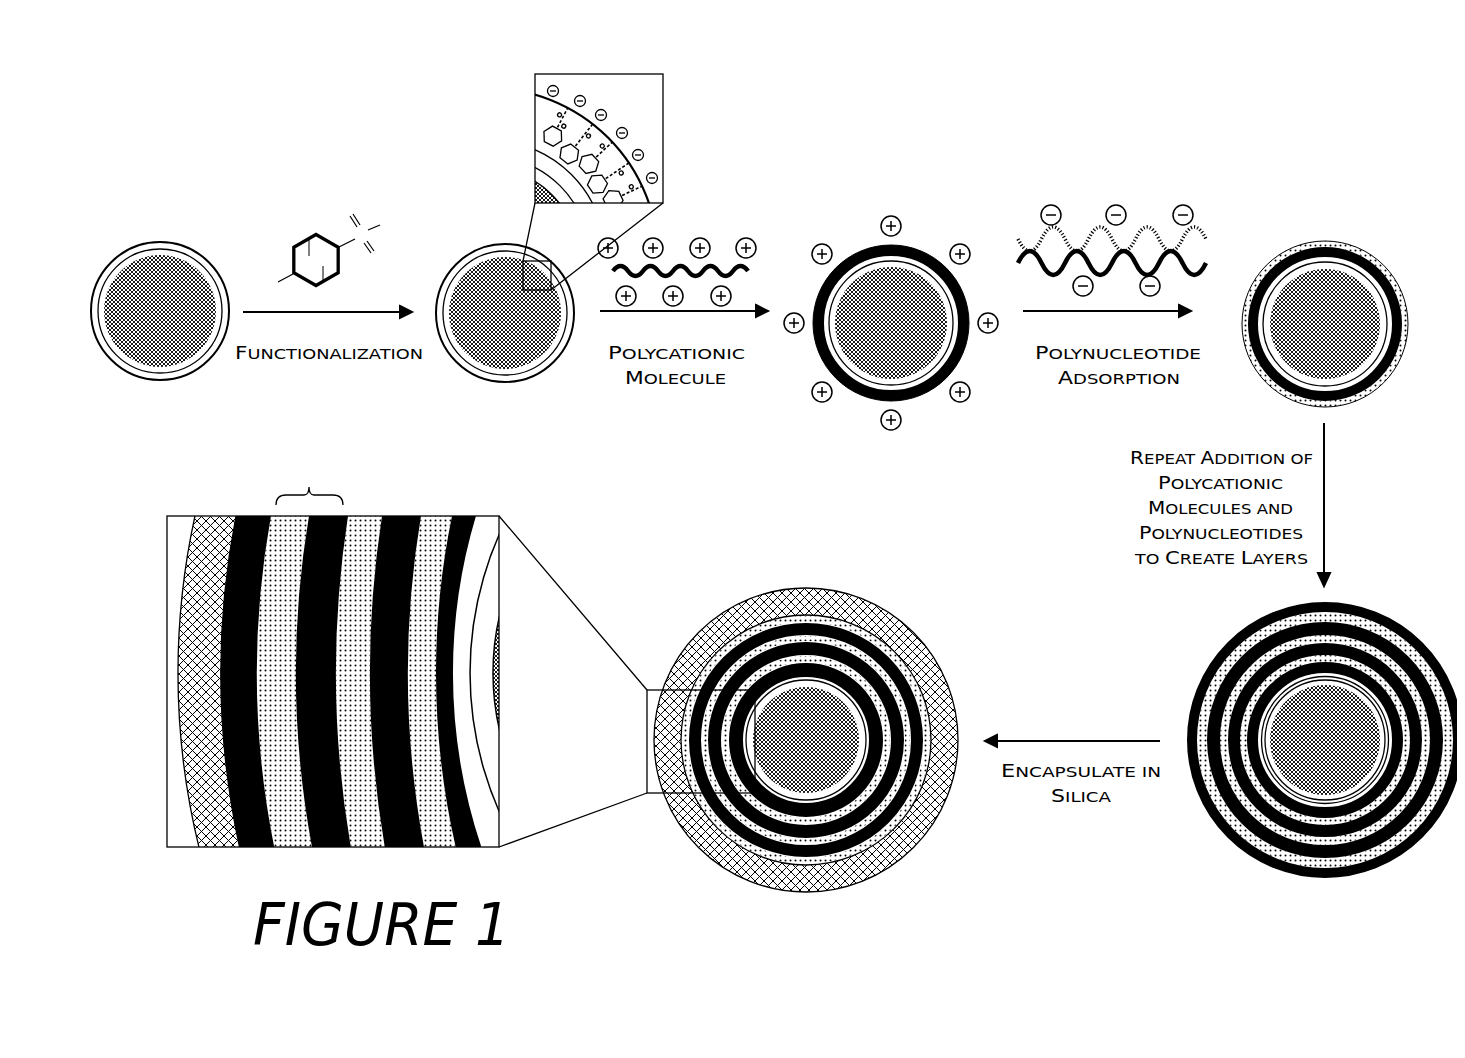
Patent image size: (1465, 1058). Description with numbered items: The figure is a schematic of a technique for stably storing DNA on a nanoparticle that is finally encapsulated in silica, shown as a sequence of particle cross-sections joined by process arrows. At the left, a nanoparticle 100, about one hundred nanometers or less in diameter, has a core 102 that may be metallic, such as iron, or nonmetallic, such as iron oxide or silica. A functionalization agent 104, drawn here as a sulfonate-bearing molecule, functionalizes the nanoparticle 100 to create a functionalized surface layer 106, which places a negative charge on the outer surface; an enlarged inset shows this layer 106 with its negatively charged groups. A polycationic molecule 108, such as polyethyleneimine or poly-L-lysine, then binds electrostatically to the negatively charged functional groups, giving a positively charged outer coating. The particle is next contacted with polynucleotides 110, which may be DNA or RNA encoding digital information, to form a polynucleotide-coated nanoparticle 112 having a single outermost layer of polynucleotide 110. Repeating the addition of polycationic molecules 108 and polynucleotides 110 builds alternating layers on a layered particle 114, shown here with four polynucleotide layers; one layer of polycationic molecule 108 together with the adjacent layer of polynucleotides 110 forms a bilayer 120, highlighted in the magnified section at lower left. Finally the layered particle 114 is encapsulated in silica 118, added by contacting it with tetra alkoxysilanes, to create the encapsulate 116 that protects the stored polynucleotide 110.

The nanoparticle 100 is at (349, 531).
The core 102 is at (155, 307).
The functionalization agent 104 is at (372, 166).
The functionalized surface layer 106 is at (500, 238).
The polycationic molecule 108 is at (730, 209).
The polynucleotide 110 is at (1082, 176).
The polynucleotide-coated nanoparticle 112 is at (1390, 210).
The layered particle 114 is at (1260, 890).
The encapsulate 116 is at (581, 683).
The silica 118 is at (935, 668).
The bilayer 120 is at (320, 480).